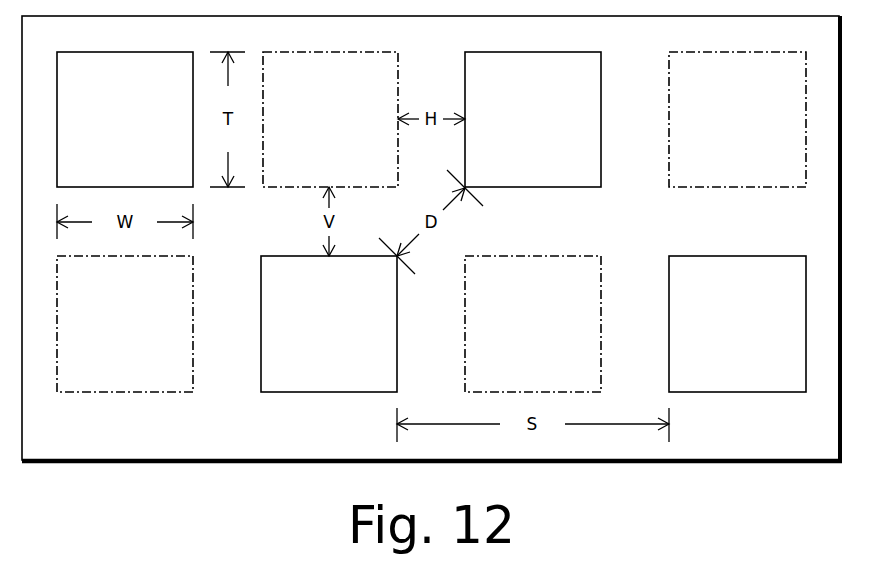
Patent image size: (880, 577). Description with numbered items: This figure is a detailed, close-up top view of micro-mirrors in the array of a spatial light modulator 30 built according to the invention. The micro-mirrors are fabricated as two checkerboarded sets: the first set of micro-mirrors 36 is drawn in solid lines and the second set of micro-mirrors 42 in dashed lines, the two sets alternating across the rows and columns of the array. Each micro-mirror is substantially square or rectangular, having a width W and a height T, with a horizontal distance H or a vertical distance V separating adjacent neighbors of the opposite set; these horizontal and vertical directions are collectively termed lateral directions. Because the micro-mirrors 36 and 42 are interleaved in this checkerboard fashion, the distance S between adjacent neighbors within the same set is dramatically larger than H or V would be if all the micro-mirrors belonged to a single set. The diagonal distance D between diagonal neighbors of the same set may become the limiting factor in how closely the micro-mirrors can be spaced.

The spatial light modulator 30 is at (127, 483).
The first set of micro-mirrors 36 is at (431, 222).
The second set of micro-mirrors 42 is at (431, 222).